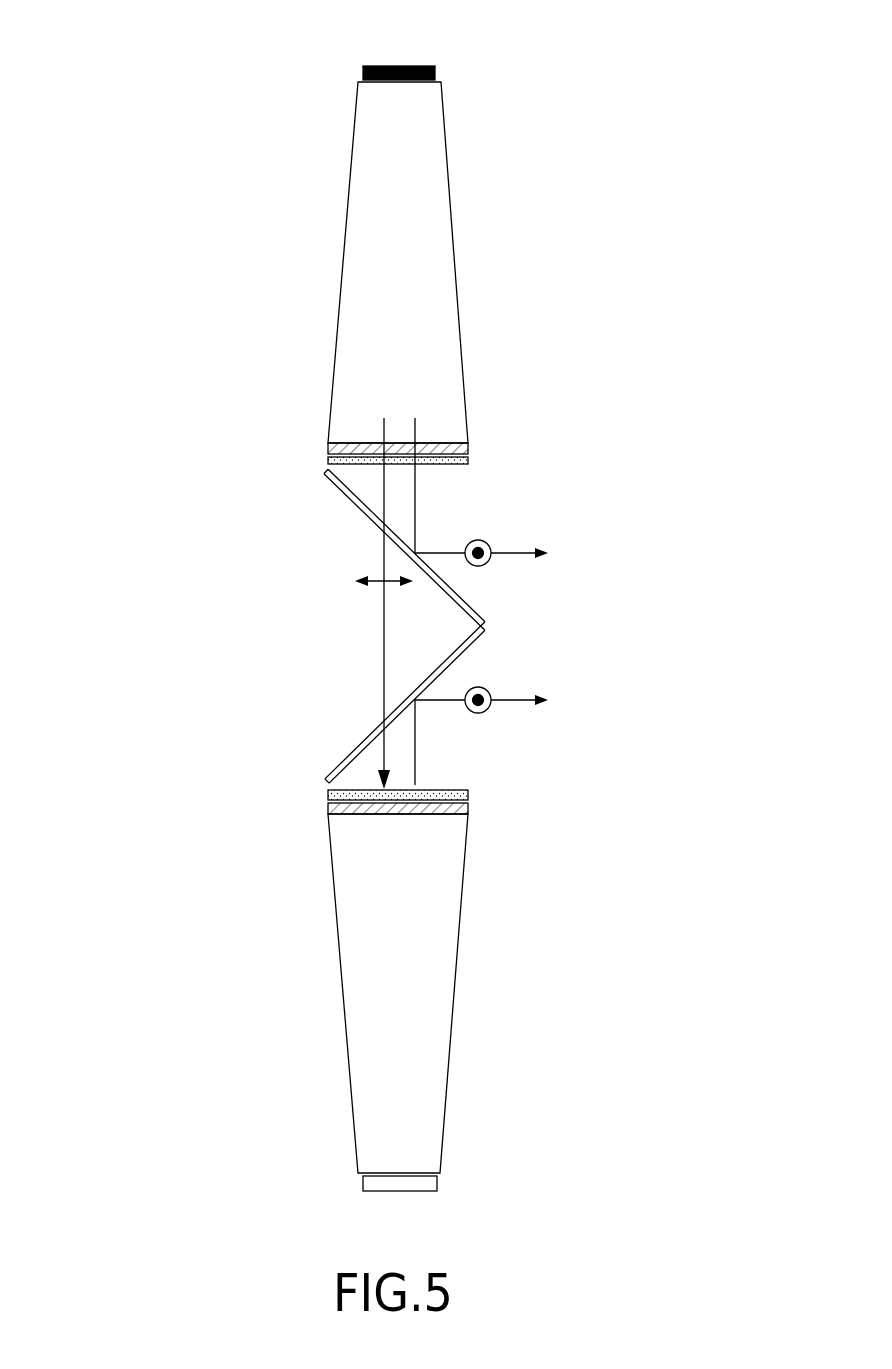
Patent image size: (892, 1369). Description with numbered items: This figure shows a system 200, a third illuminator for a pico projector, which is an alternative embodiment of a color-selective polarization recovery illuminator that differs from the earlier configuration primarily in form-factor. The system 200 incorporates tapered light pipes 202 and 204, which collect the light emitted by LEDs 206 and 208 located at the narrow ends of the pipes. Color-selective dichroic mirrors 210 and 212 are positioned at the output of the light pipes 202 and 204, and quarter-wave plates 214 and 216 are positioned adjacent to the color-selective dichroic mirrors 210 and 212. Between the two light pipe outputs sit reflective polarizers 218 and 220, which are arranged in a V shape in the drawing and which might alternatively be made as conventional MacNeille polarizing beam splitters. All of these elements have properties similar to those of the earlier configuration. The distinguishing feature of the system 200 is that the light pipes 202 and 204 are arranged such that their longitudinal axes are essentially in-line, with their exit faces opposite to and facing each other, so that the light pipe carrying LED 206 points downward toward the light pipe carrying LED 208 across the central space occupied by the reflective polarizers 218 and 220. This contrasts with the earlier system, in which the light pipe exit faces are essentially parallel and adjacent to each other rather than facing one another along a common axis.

The system 200 is at (205, 98).
The tapered light pipe 202 is at (433, 262).
The tapered light pipe 204 is at (443, 908).
The LED 206 is at (417, 65).
The LED 208 is at (425, 1183).
The color-selective dichroic mirror 210 is at (468, 450).
The color-selective dichroic mirror 212 is at (468, 808).
The quarter-wave plate 214 is at (468, 461).
The quarter-wave plate 216 is at (468, 793).
The reflective polarizer 218 is at (343, 500).
The reflective polarizer 220 is at (357, 746).